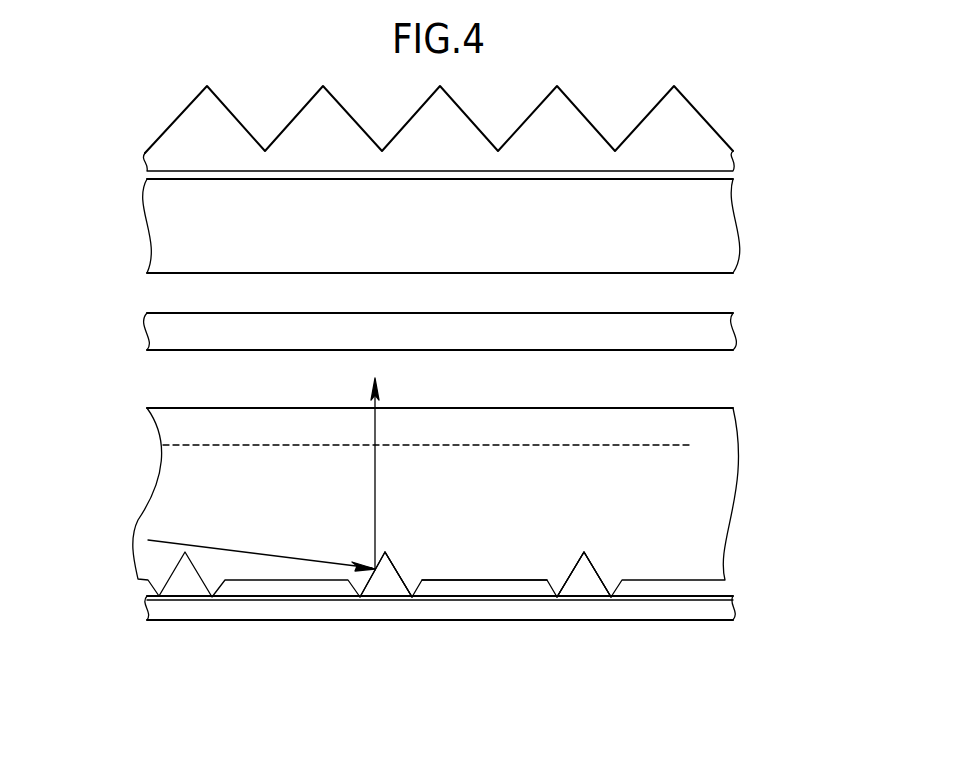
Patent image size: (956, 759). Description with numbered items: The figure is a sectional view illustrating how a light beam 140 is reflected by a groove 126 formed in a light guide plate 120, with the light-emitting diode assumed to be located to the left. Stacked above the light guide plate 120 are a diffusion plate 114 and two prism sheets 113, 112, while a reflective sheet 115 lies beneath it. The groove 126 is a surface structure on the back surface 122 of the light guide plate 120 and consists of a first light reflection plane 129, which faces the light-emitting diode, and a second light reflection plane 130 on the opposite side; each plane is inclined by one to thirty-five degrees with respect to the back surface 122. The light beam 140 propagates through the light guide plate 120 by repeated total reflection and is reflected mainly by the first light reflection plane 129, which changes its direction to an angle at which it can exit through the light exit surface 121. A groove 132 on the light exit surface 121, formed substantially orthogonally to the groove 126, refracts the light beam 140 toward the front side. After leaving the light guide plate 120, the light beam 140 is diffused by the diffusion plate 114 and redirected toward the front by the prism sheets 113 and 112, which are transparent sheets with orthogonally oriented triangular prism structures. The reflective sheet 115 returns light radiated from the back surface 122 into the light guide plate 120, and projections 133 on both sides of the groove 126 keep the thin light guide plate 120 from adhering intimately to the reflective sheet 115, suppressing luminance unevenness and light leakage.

The prism sheet 112 is at (734, 157).
The prism sheet 113 is at (738, 232).
The diffusion plate 114 is at (736, 334).
The reflective sheet 115 is at (736, 609).
The light guide plate 120 is at (728, 491).
The light exit surface 121 is at (173, 408).
The back surface 122 is at (483, 580).
The groove 126 is at (582, 584).
The first light reflection plane 129 is at (368, 590).
The second light reflection plane 130 is at (400, 592).
The groove 132 is at (690, 445).
The projections 133 is at (548, 590).
The light beam 140 is at (275, 557).